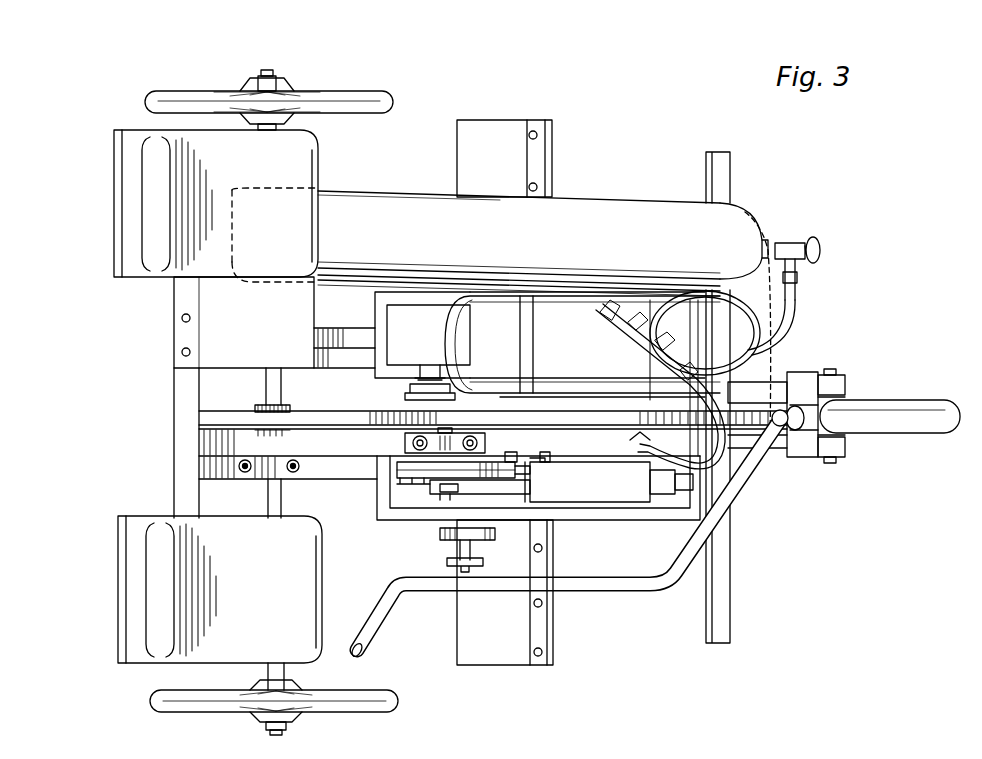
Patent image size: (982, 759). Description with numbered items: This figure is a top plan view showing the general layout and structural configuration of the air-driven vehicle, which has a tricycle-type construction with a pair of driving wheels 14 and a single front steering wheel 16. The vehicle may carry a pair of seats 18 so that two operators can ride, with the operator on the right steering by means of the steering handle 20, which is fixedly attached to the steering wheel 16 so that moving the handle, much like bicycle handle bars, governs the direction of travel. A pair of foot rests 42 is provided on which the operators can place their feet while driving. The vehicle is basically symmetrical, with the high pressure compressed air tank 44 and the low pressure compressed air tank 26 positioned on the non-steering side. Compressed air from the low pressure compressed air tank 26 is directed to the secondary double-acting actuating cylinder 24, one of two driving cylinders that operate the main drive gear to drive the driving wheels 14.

The driving wheels 14 is at (345, 93).
The steering wheel 16 is at (892, 412).
The seat 18 is at (300, 170).
The steering handle 20 is at (630, 597).
The secondary double-acting actuating cylinder 24 is at (608, 490).
The low pressure compressed air tank 26 is at (570, 354).
The foot rests 42 is at (495, 135).
The high pressure compressed air tank 44 is at (620, 215).